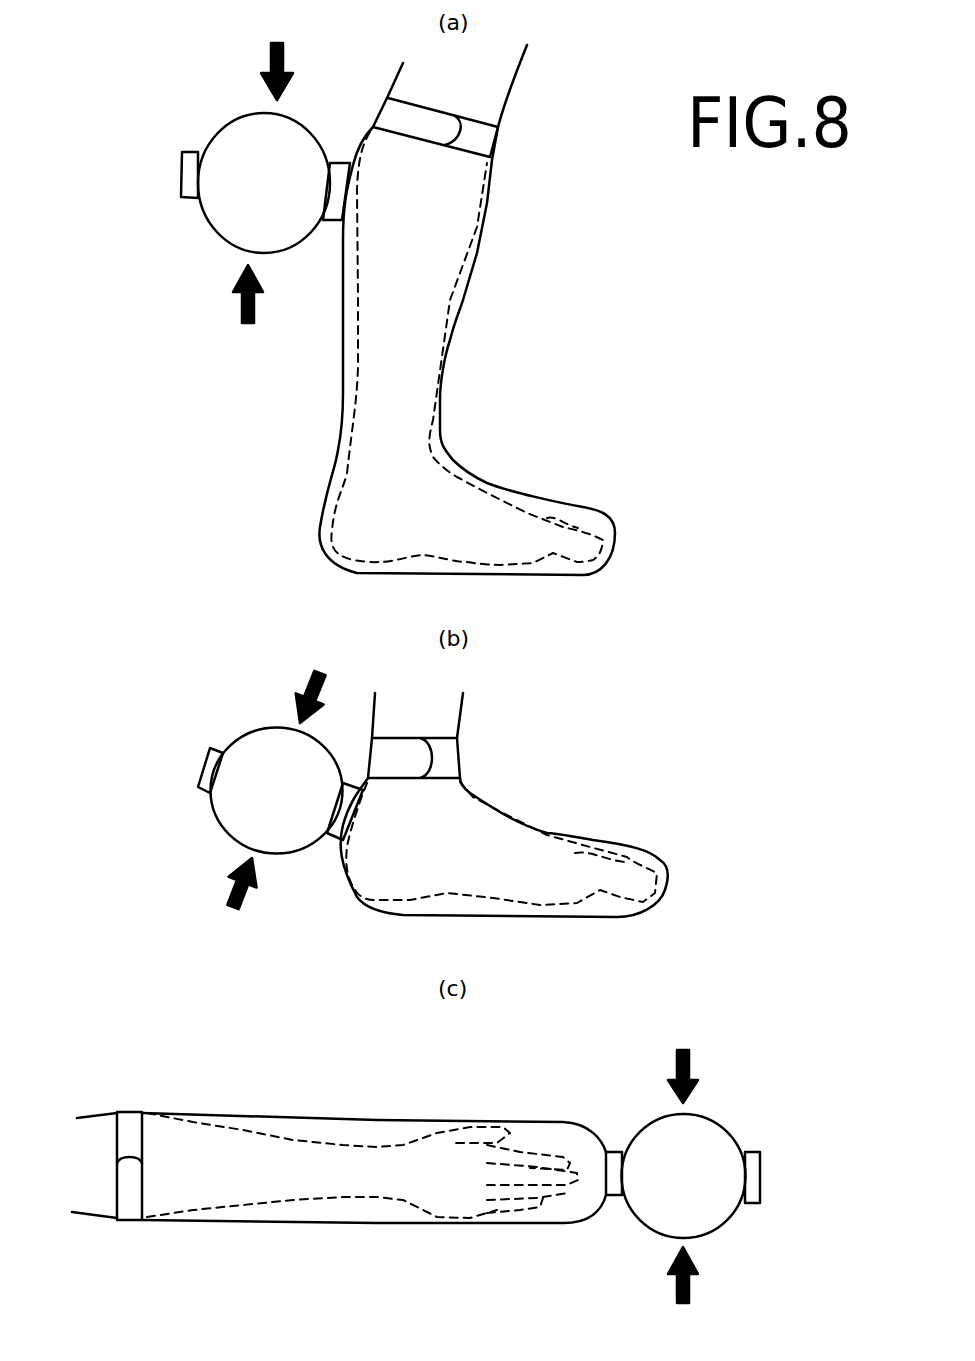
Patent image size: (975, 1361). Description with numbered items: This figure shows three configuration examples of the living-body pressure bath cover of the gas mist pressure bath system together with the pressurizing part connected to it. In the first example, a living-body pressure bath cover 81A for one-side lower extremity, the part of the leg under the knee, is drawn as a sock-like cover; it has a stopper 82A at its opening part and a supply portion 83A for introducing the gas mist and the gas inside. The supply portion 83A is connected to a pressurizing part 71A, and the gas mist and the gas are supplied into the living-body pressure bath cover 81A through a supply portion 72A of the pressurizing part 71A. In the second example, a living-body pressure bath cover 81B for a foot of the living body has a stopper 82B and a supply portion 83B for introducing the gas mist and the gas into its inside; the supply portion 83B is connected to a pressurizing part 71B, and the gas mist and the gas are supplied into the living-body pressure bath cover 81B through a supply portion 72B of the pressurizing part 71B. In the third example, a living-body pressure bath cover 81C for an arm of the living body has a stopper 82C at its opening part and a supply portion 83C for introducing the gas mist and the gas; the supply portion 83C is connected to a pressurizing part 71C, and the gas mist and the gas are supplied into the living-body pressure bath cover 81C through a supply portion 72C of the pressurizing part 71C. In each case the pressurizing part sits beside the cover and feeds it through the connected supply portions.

The pressurizing part 71A is at (243, 117).
The supply portion of pressurizing part 72A is at (185, 200).
The supply portion 83A is at (342, 163).
The living-body pressure bath cover 81A is at (552, 118).
The stopper 82A is at (496, 143).
The pressurizing part 71B is at (270, 728).
The supply portion of pressurizing part 72B is at (200, 788).
The supply portion 83B is at (355, 783).
The living-body pressure bath cover 81B is at (590, 728).
The stopper 82B is at (460, 750).
The pressurizing part 71C is at (705, 1118).
The supply portion of pressurizing part 72C is at (750, 1152).
The supply portion 83C is at (613, 1152).
The living-body pressure bath cover 81C is at (480, 1085).
The stopper 82C is at (127, 1112).